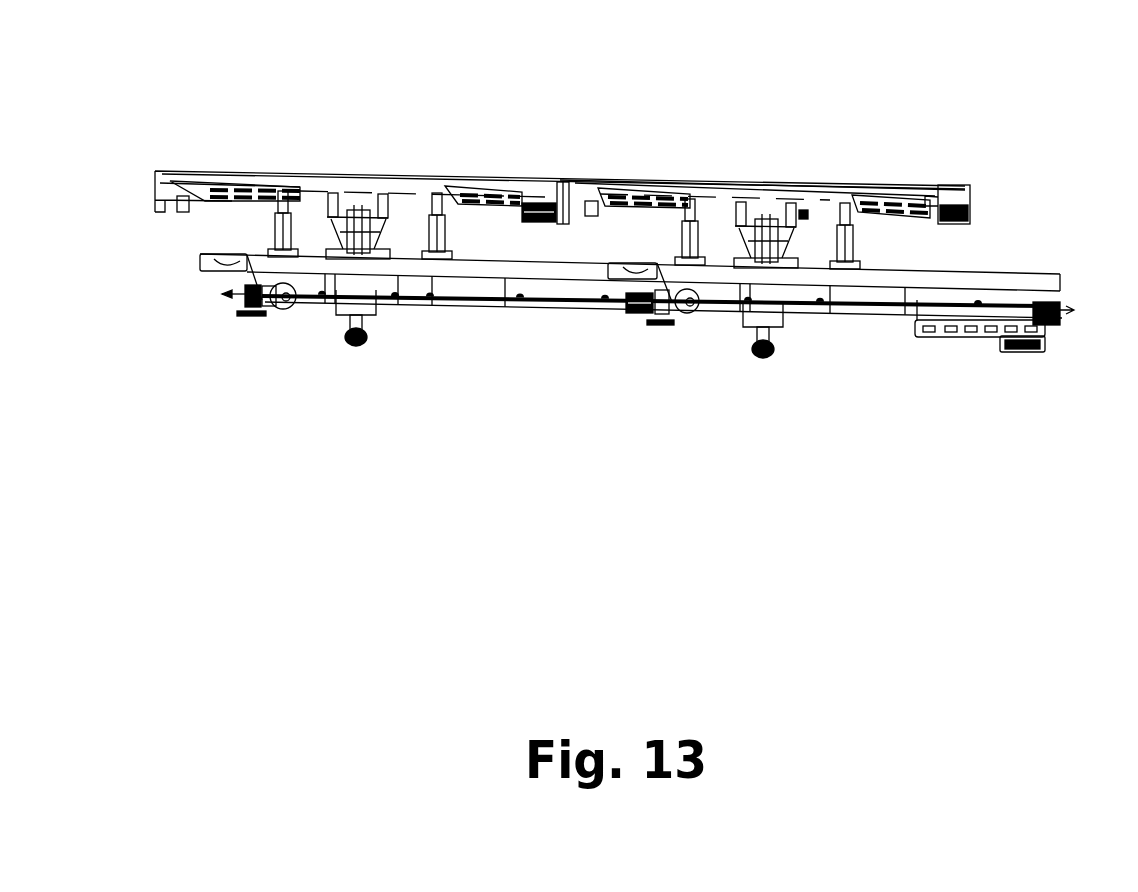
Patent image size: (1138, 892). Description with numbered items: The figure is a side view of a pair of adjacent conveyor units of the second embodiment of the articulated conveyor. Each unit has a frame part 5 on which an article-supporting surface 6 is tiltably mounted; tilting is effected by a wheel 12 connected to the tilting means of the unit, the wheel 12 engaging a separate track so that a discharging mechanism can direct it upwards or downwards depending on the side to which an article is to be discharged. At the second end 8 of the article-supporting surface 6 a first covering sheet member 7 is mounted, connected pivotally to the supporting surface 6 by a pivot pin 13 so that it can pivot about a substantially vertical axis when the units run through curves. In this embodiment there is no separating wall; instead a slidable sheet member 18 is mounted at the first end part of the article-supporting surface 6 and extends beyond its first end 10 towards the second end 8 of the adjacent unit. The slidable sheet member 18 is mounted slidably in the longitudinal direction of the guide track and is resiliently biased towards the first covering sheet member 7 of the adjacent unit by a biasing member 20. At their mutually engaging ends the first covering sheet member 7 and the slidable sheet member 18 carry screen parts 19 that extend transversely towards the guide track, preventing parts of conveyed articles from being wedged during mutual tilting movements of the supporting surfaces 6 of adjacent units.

The frame part 5 is at (452, 302).
The article-supporting surface 6 is at (800, 172).
The first covering sheet member 7 is at (178, 168).
The second end 8 is at (588, 170).
The first end 10 is at (530, 178).
The wheel 12 is at (344, 343).
The pivot pin 13 is at (283, 165).
The slidable sheet member 18 is at (547, 204).
The screen part 19 is at (148, 230).
The biasing member 20 is at (532, 215).